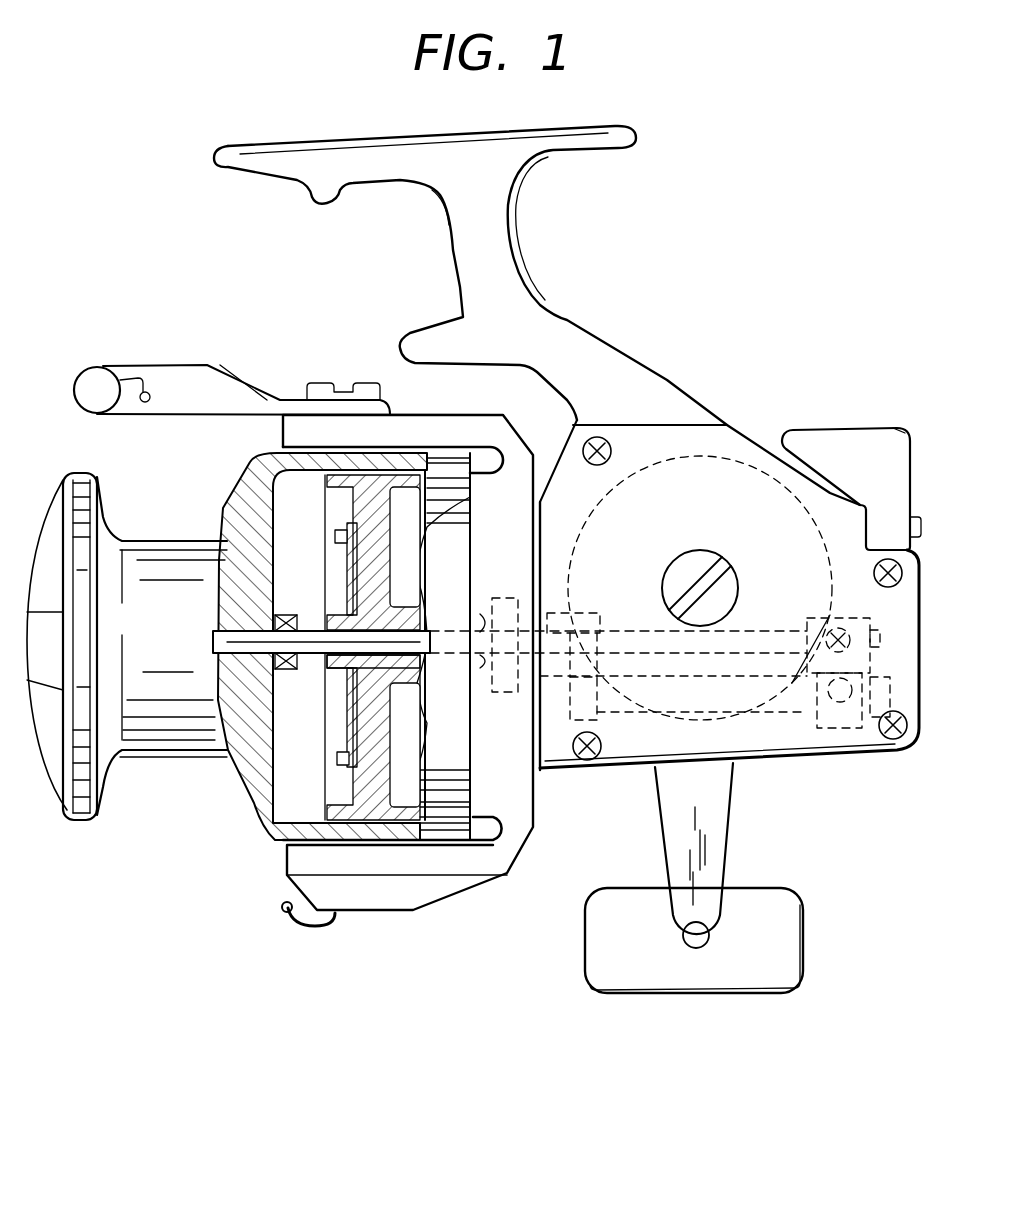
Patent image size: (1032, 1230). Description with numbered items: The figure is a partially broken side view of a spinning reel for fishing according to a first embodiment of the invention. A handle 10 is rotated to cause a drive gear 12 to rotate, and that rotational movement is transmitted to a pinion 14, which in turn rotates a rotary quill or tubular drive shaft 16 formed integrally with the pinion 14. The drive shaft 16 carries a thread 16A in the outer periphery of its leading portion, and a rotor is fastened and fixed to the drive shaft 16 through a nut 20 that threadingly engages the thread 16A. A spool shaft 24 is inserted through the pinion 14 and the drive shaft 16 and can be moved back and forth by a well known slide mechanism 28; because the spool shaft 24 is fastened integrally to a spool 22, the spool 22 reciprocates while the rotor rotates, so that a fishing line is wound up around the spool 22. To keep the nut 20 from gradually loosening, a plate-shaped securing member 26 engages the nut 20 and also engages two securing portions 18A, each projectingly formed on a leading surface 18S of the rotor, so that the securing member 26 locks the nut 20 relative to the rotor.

The handle 10 is at (717, 867).
The drive gear 12 is at (713, 455).
The pinion 14 is at (583, 613).
The drive shaft 16 is at (437, 690).
The thread 16A is at (342, 664).
The leading surface 18S is at (352, 515).
The securing portion 18A is at (340, 766).
The nut 20 is at (345, 680).
The spool 22 is at (148, 557).
The spool shaft 24 is at (310, 640).
The securing member 26 is at (347, 582).
The slide mechanism 28 is at (833, 728).